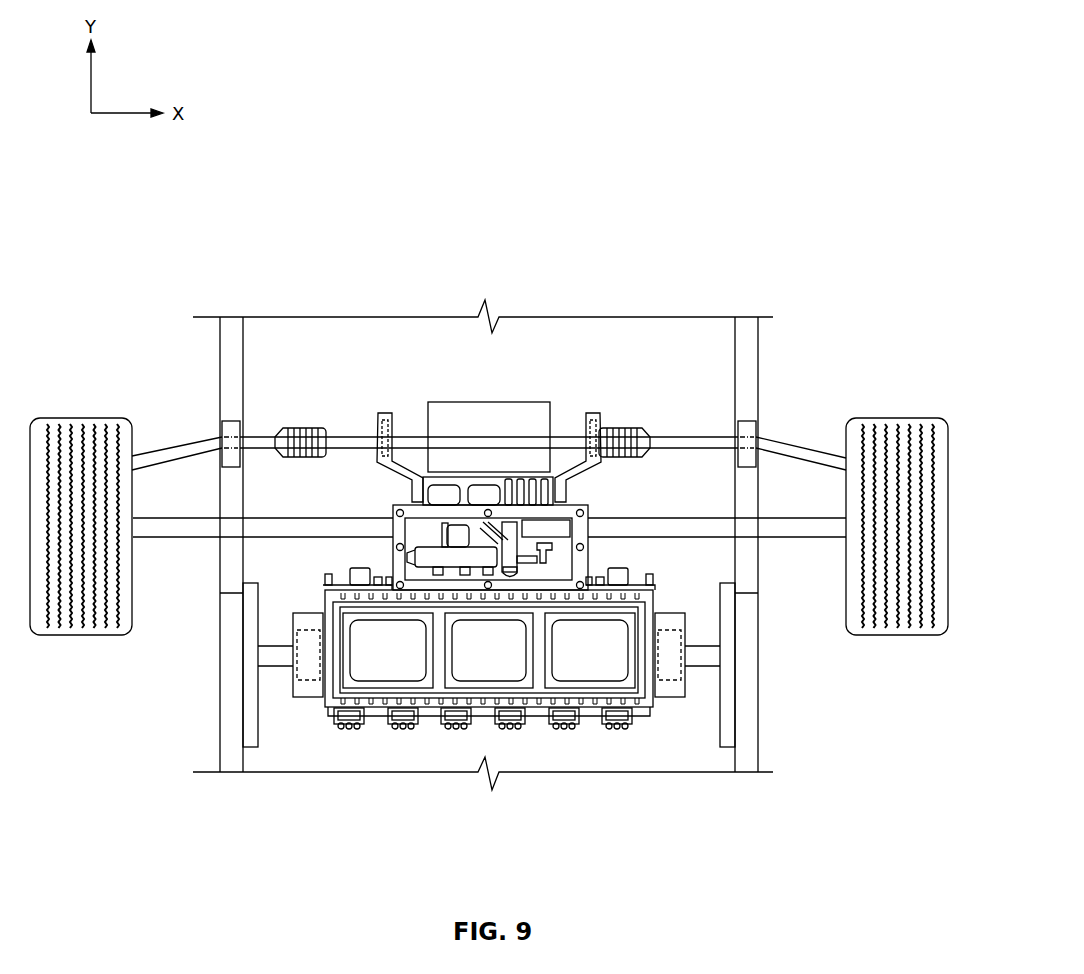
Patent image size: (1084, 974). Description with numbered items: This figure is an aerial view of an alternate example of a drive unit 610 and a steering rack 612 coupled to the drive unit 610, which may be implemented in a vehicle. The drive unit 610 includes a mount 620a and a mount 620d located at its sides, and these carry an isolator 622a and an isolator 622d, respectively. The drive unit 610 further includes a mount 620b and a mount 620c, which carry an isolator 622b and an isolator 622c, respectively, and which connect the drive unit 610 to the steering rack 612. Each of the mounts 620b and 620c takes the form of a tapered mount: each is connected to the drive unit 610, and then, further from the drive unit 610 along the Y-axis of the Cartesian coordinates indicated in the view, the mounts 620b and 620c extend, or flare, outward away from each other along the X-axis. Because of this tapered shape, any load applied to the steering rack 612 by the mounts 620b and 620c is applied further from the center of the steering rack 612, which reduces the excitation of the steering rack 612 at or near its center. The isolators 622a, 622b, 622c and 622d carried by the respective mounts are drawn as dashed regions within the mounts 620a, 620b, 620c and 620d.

The drive unit 610 is at (533, 718).
The steering rack 612 is at (623, 435).
The mount 620a is at (300, 698).
The mount 620b is at (385, 413).
The mount 620c is at (591, 413).
The mount 620d is at (682, 698).
The isolator 622a is at (315, 682).
The isolator 622b is at (381, 420).
The isolator 622c is at (597, 428).
The isolator 622d is at (665, 682).